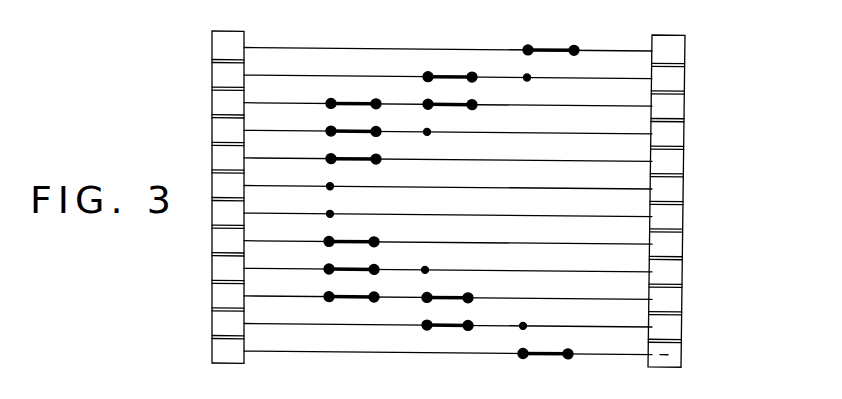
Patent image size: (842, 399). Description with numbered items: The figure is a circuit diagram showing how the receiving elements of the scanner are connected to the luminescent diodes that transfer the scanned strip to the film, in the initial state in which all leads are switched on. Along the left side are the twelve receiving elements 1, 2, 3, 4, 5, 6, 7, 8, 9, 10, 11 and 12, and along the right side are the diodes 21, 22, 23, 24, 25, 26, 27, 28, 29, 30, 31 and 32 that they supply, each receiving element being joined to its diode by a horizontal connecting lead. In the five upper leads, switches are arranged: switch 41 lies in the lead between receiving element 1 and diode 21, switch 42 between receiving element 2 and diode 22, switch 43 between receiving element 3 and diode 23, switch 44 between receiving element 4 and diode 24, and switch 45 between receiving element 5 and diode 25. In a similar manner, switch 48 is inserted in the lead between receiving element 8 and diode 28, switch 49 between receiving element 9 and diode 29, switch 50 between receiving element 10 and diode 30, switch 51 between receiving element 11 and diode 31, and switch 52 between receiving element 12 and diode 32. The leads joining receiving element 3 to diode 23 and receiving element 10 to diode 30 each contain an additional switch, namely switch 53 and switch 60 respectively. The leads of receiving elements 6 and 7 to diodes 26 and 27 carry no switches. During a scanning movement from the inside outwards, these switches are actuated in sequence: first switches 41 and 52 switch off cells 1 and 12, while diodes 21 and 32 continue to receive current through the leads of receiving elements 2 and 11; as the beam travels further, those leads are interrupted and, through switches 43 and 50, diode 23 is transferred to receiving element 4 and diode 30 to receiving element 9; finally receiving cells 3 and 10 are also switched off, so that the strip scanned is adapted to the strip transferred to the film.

The receiving element 1 is at (226, 46).
The receiving element 2 is at (226, 74).
The receiving element 3 is at (226, 102).
The receiving element 4 is at (226, 129).
The receiving element 5 is at (226, 157).
The receiving element 6 is at (226, 184).
The receiving element 7 is at (226, 212).
The receiving element 8 is at (226, 240).
The receiving element 9 is at (226, 267).
The receiving element 10 is at (226, 295).
The receiving element 11 is at (226, 322).
The receiving element 12 is at (226, 350).
The luminescent diode 21 is at (668, 48).
The luminescent diode 22 is at (668, 75).
The luminescent diode 23 is at (668, 103).
The luminescent diode 24 is at (668, 130).
The luminescent diode 25 is at (668, 158).
The luminescent diode 26 is at (668, 186).
The luminescent diode 27 is at (668, 213).
The luminescent diode 28 is at (668, 241).
The luminescent diode 29 is at (668, 268).
The luminescent diode 30 is at (668, 296).
The luminescent diode 31 is at (668, 324).
The luminescent diode 32 is at (668, 351).
The switch 41 is at (564, 38).
The switch 42 is at (462, 73).
The switch 43 is at (447, 102).
The switch 44 is at (344, 129).
The switch 45 is at (344, 156).
The switch 48 is at (350, 245).
The switch 49 is at (355, 272).
The switch 50 is at (455, 297).
The switch 51 is at (452, 325).
The switch 52 is at (545, 355).
The additional switch 53 is at (363, 97).
The additional switch 60 is at (357, 299).